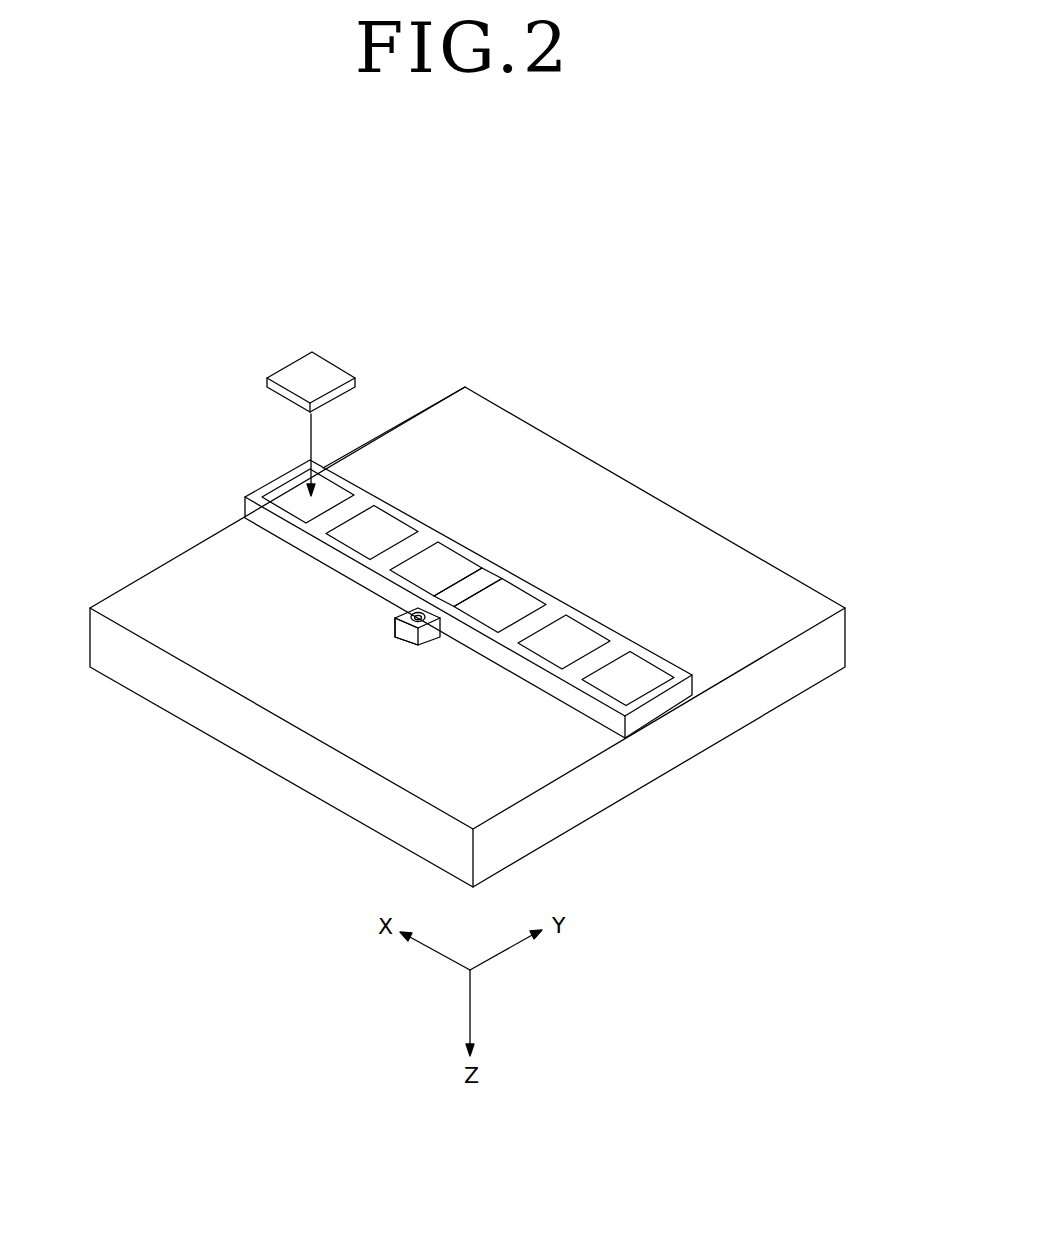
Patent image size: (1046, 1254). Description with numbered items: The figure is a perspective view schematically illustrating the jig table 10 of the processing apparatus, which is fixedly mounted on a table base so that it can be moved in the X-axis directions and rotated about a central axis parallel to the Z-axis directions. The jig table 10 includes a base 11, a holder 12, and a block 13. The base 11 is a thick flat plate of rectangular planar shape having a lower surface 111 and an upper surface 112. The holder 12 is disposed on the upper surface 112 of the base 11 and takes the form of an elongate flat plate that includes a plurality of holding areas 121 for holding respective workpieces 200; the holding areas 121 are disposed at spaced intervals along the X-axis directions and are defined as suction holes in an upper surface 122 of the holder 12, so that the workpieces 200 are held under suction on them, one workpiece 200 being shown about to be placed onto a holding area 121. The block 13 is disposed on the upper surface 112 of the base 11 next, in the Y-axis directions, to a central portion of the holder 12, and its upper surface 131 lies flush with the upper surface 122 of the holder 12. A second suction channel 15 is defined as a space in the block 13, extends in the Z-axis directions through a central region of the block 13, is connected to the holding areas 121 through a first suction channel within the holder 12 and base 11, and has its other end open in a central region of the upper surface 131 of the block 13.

The jig table 10 is at (512, 276).
The base 11 is at (504, 637).
The lower surface of the base 111 is at (797, 698).
The upper surface of the base 112 is at (797, 583).
The holder 12 is at (468, 562).
The holding areas 121 is at (340, 492).
The upper surface of the holder 122 is at (495, 570).
The block 13 is at (419, 648).
The upper surface of the block 131 is at (422, 638).
The second suction channel 15 is at (402, 645).
The workpieces 200 is at (295, 368).